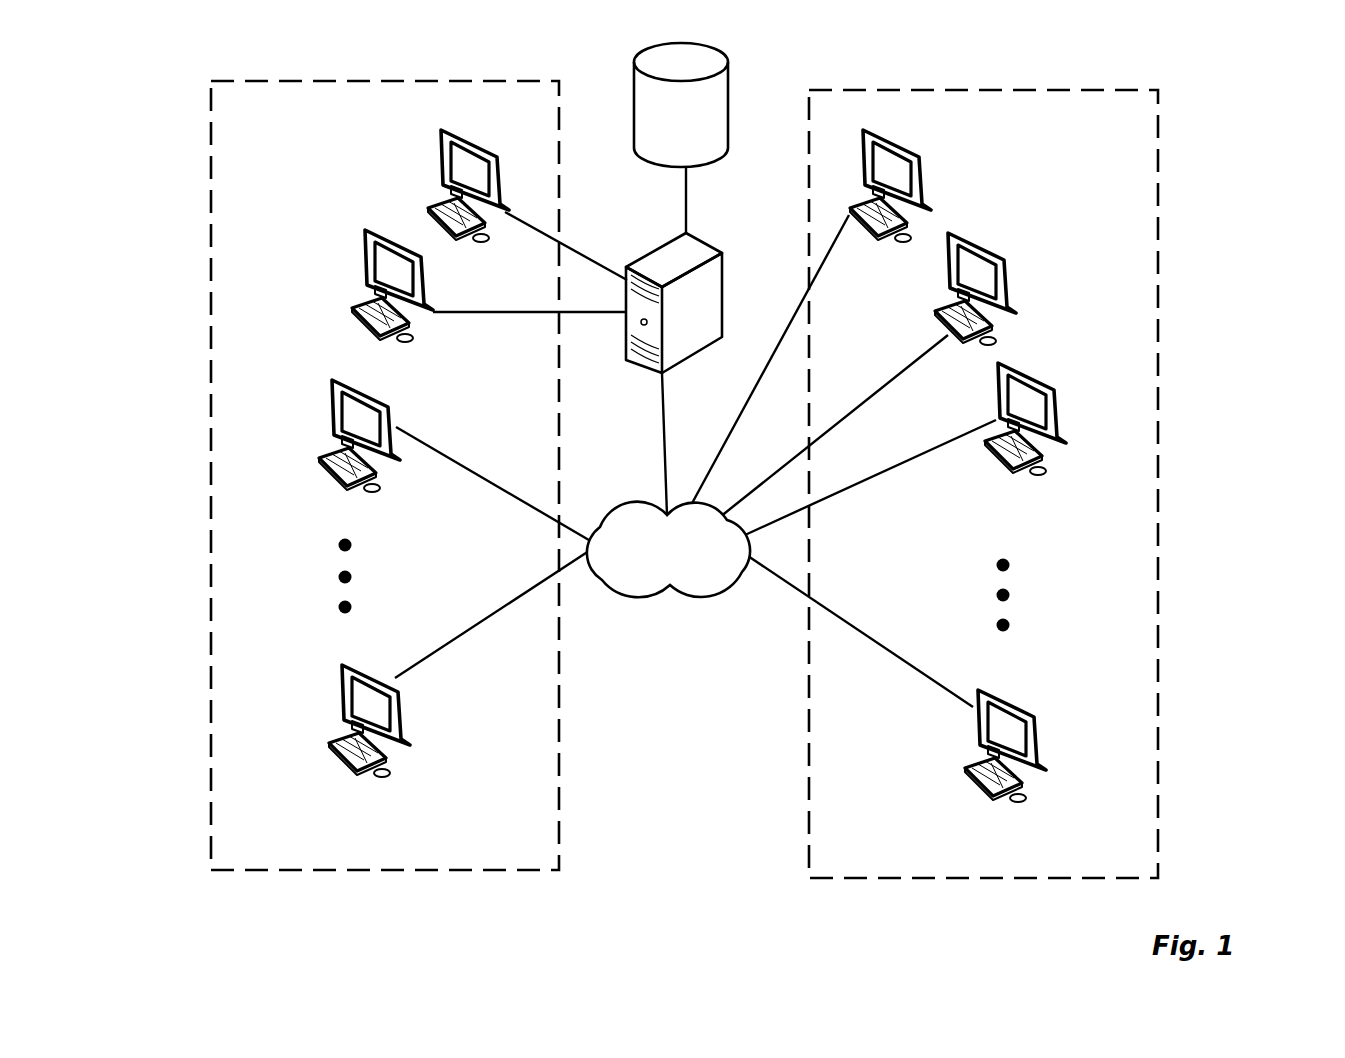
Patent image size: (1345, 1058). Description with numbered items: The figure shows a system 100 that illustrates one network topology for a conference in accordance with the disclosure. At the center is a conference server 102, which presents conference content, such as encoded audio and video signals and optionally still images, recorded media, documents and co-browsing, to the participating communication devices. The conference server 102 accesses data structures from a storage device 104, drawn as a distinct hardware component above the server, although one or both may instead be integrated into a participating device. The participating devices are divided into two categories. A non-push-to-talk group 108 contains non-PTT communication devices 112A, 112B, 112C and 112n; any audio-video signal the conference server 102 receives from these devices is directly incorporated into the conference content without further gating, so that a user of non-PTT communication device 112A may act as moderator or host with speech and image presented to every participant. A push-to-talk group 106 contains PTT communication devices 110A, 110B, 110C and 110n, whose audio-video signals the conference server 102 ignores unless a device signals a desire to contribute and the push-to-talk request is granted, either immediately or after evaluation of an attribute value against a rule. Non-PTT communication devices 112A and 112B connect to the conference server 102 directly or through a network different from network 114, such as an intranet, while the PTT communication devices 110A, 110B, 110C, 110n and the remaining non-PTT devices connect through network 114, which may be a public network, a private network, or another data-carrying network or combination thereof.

The system 100 is at (1240, 92).
The conference server 102 is at (722, 272).
The storage device 104 is at (728, 92).
The push-to-talk group 106 is at (1158, 205).
The non-push-to-talk group 108 is at (211, 160).
The PTT communication device 110A is at (930, 180).
The PTT communication device 110B is at (1013, 258).
The PTT communication device 110C is at (1057, 387).
The PTT communication device 110n is at (1035, 713).
The non-PTT communication device 112A is at (440, 162).
The non-PTT communication device 112B is at (365, 250).
The non-PTT communication device 112C is at (331, 395).
The non-PTT communication device 112n is at (343, 692).
The network 114 is at (652, 595).